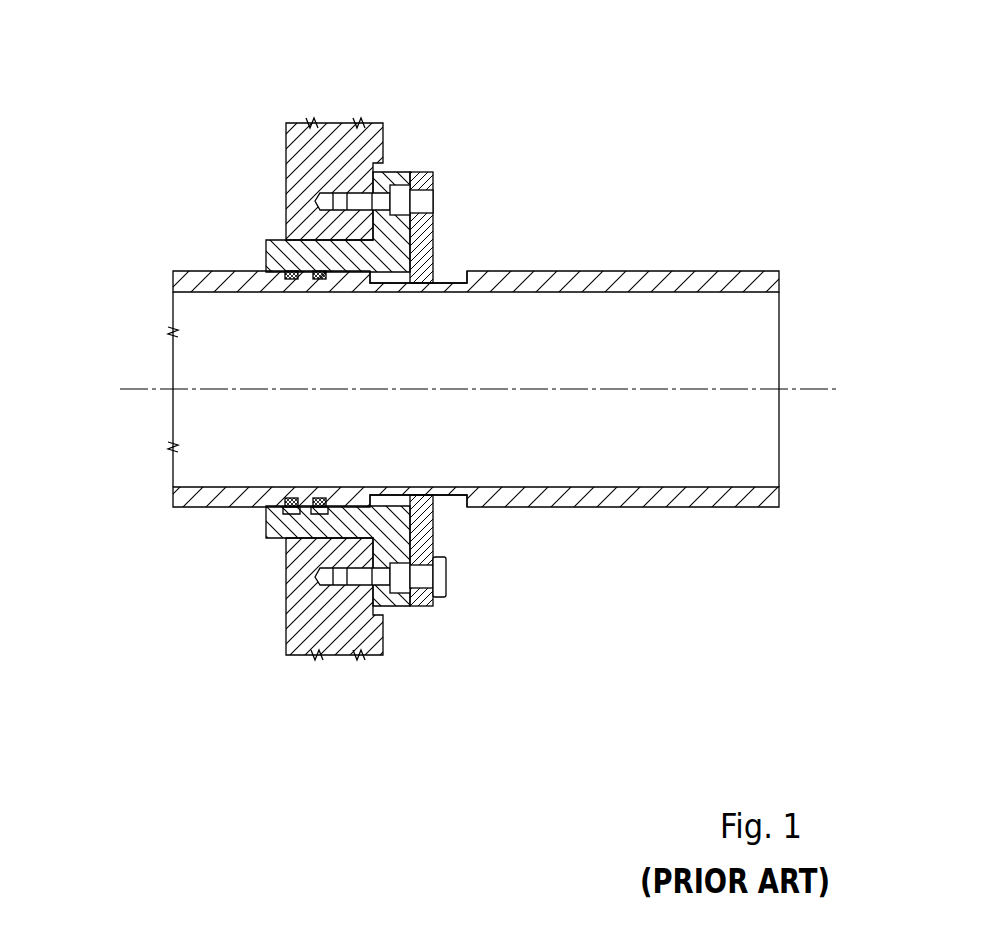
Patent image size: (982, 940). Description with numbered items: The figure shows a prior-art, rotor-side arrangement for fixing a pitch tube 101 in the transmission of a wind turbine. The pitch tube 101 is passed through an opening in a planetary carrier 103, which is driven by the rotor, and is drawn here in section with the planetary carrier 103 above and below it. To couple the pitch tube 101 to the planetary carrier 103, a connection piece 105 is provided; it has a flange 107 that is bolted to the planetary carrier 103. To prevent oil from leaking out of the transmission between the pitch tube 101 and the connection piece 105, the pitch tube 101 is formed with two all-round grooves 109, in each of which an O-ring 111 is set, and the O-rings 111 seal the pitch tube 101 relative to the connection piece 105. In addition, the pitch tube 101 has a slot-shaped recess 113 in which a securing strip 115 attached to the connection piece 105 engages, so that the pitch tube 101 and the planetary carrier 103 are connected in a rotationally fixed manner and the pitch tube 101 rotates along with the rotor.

The pitch tube 101 is at (197, 280).
The planetary carrier 103 is at (317, 622).
The connection piece 105 is at (440, 217).
The flange 107 is at (435, 537).
The all-round grooves 109 is at (320, 498).
The O-ring 111 is at (325, 514).
The slot-shaped recess 113 is at (460, 273).
The securing strip 115 is at (435, 255).